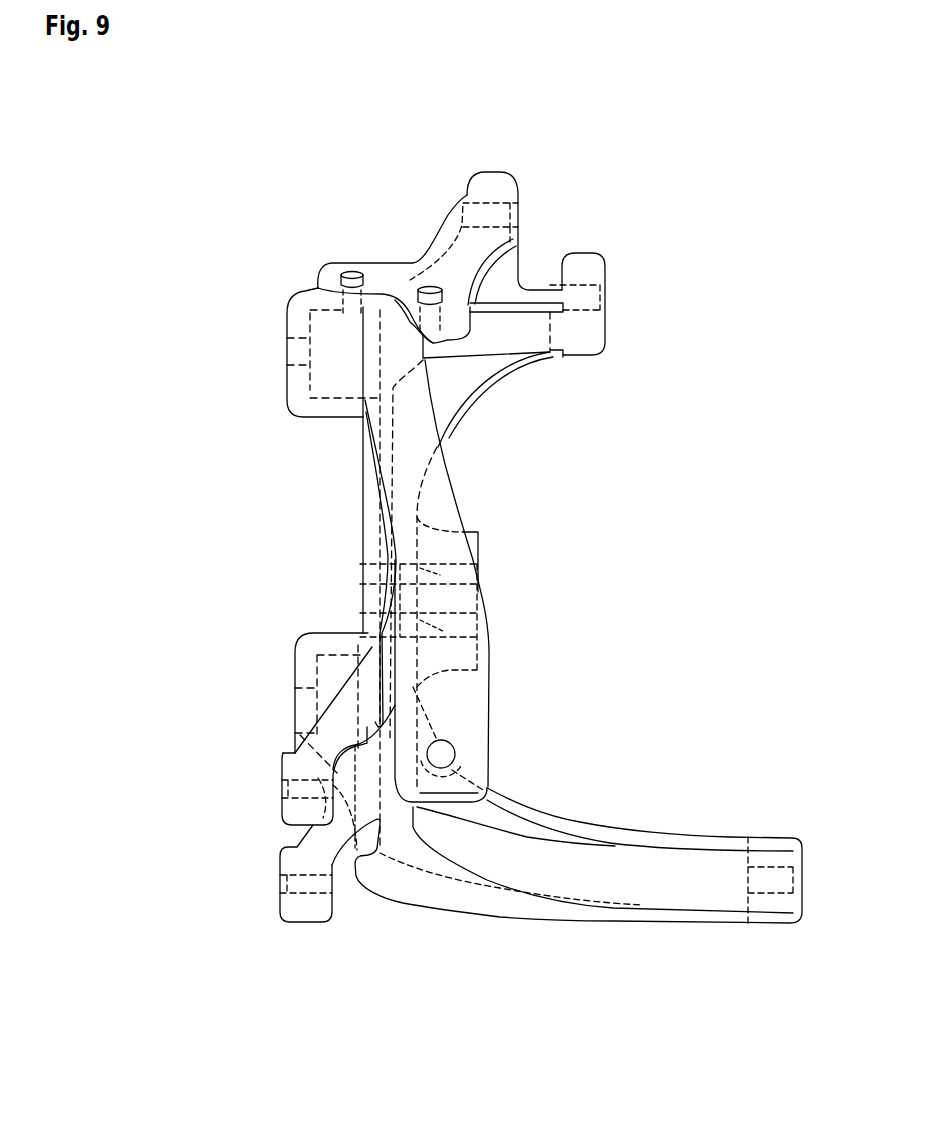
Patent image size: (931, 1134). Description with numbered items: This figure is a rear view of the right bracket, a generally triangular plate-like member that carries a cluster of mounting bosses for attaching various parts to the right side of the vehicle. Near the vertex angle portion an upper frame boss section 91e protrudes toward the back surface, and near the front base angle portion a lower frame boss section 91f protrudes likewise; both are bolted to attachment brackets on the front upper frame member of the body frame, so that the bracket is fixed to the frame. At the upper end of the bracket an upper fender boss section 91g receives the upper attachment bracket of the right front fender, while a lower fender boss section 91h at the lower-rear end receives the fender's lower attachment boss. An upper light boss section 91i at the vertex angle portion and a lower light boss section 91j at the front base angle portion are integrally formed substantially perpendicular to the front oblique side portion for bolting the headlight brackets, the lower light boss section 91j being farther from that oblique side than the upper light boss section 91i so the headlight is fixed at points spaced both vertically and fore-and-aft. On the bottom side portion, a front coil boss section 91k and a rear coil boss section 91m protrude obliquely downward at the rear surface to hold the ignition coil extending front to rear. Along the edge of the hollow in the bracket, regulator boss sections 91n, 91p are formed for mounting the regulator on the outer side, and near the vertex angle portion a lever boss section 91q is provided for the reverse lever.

The upper frame boss section 91e is at (288, 320).
The lower frame boss section 91f is at (295, 675).
The upper fender boss section 91g is at (518, 183).
The lower fender boss section 91h is at (488, 765).
The upper light boss section 91i is at (607, 270).
The lower light boss section 91j is at (802, 838).
The front coil boss section 91k is at (280, 902).
The rear coil boss section 91m is at (282, 812).
The regulator boss section 91n is at (480, 540).
The regulator boss section 91p is at (490, 640).
The lever boss section 91q is at (390, 275).